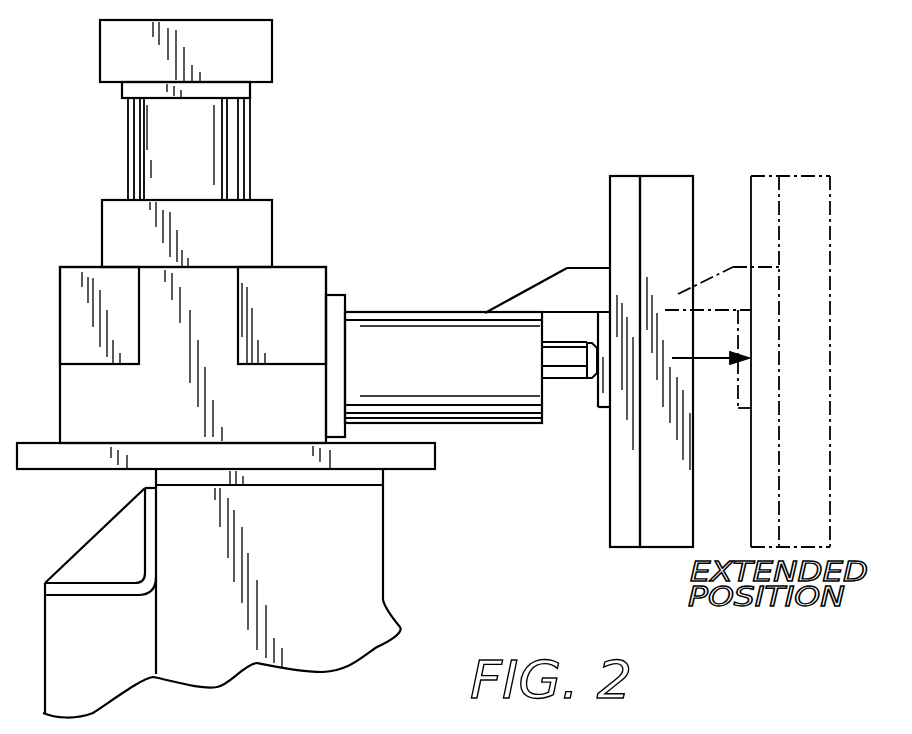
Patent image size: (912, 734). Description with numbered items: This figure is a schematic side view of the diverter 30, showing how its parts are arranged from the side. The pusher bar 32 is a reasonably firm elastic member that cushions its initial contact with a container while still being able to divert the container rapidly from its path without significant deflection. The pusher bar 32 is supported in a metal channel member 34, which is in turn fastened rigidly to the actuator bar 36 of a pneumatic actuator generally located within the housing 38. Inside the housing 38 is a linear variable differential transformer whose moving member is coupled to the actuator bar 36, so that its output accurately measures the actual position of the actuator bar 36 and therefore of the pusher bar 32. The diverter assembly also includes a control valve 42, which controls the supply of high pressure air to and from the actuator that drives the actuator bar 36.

The actuator assembly 30 is at (449, 113).
The pusher bar 32 is at (665, 190).
The channel member 34 is at (610, 200).
The actuator bar 36 is at (566, 362).
The housing 38 is at (403, 335).
The control valve 42 is at (228, 158).